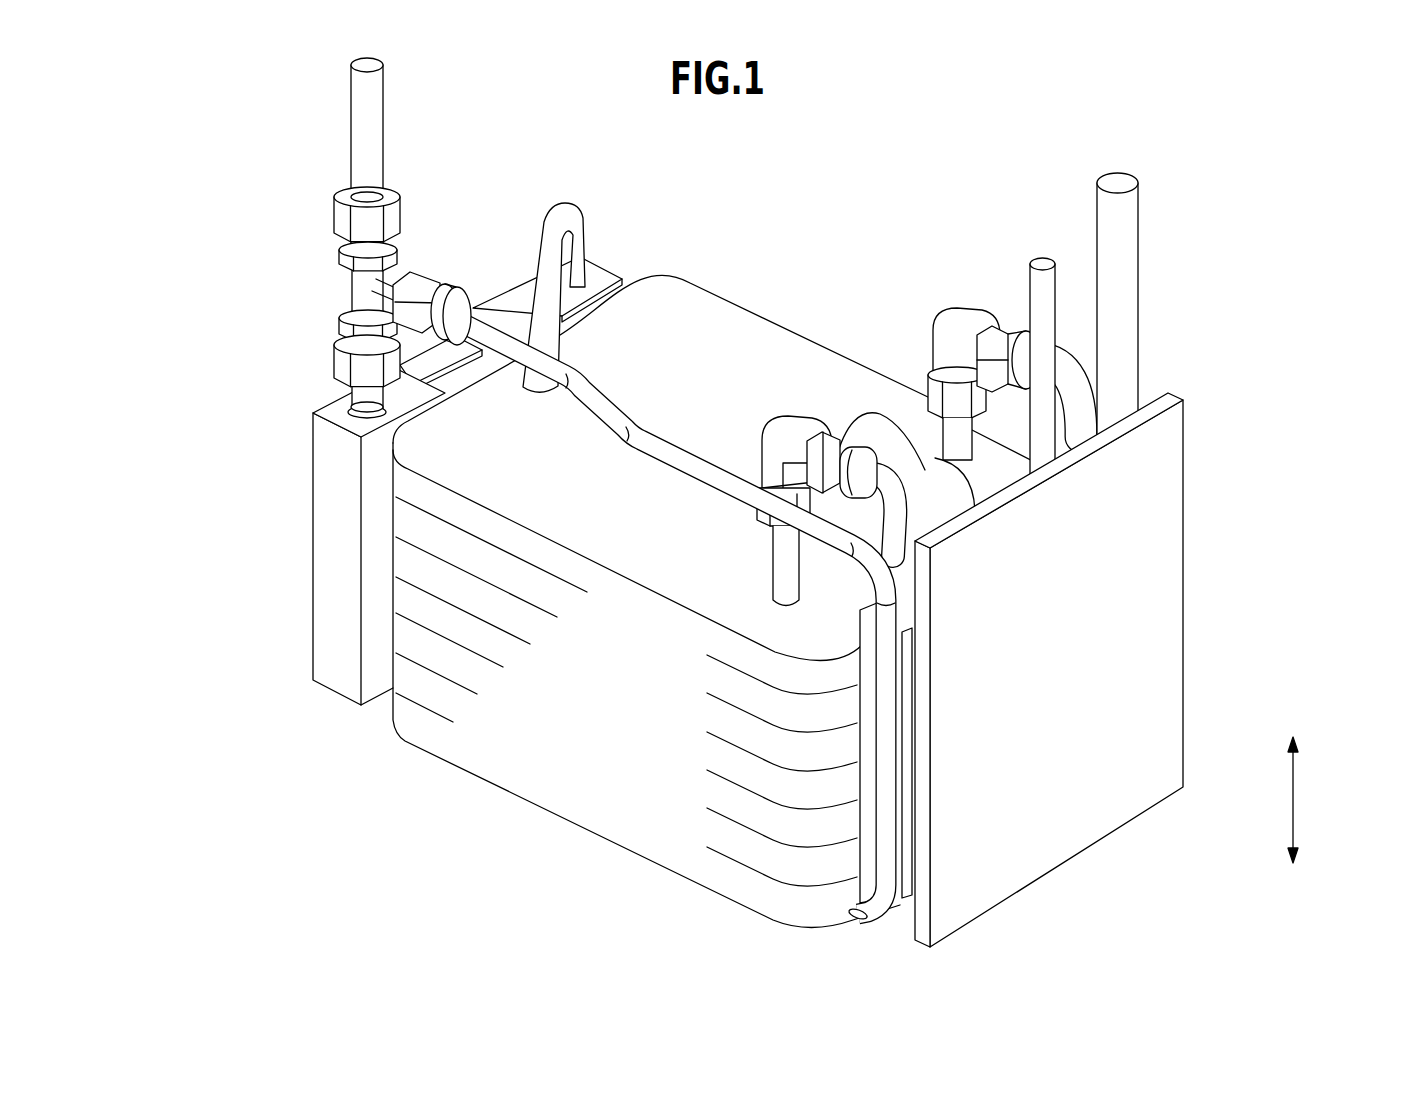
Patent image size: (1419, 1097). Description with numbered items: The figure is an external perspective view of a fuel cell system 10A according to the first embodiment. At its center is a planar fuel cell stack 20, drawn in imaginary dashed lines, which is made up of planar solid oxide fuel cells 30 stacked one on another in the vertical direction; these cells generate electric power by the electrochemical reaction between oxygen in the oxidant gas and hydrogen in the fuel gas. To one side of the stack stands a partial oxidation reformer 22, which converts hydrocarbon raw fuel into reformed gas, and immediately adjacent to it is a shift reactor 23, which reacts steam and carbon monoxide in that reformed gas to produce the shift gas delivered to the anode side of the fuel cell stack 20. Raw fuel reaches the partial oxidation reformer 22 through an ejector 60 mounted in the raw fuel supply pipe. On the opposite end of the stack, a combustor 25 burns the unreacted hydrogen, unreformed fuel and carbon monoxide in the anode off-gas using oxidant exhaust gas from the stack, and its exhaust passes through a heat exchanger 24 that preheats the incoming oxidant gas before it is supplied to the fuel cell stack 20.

The fuel cell system 10A is at (1233, 147).
The fuel cell stack 20 is at (636, 707).
The partial oxidation reformer 22 is at (320, 538).
The shift reactor 23 is at (600, 277).
The heat exchanger 24 is at (1163, 589).
The combustor 25 is at (900, 925).
The solid oxide fuel cell 30 is at (747, 842).
The ejector 60 is at (352, 293).